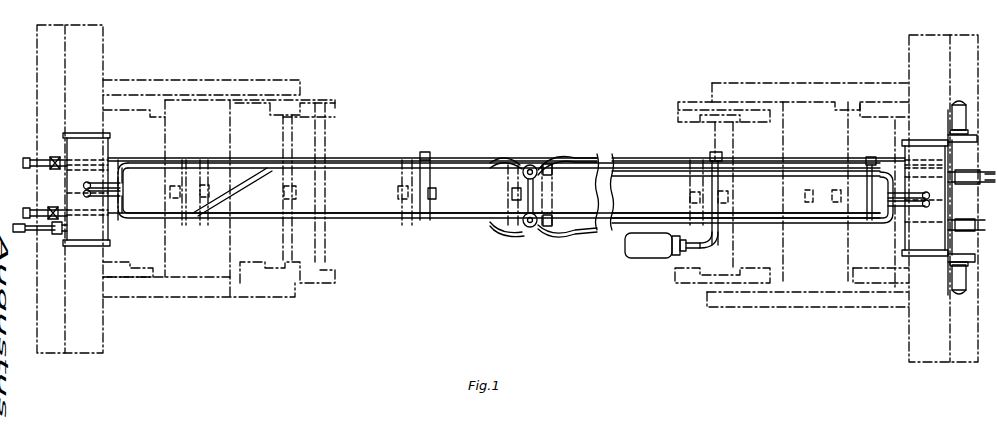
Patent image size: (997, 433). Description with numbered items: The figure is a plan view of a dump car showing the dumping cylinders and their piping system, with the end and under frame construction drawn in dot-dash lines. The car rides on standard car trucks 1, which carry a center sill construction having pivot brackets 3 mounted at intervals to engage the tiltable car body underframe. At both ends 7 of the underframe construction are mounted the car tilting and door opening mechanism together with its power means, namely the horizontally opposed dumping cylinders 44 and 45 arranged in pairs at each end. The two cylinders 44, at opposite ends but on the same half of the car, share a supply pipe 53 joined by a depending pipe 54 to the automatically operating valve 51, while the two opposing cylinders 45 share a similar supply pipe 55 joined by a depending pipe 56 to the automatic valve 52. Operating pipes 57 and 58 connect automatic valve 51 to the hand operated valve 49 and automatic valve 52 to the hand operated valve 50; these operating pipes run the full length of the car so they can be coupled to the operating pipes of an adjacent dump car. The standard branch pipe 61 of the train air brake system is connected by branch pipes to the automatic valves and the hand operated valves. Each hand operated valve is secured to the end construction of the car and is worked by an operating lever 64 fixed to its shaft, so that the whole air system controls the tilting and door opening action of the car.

The car truck 1 is at (187, 262).
The pivot bracket 3 is at (512, 188).
The end of car underframe construction 7 is at (75, 316).
The dumping cylinder 44 is at (77, 148).
The dumping cylinder 45 is at (82, 242).
The hand operated valve 49 is at (963, 116).
The hand operated valve 50 is at (962, 280).
The automatically operating valve 51 is at (546, 165).
The automatically operating valve 52 is at (541, 229).
The supply pipe 53 is at (175, 163).
The depending pipe 54 is at (553, 172).
The supply pipe 55 is at (388, 222).
The depending pipe 56 is at (553, 222).
The operating pipe 57 is at (28, 164).
The operating pipe 58 is at (25, 214).
The branch pipe of the train 61 is at (47, 232).
The operating lever 64 is at (966, 140).